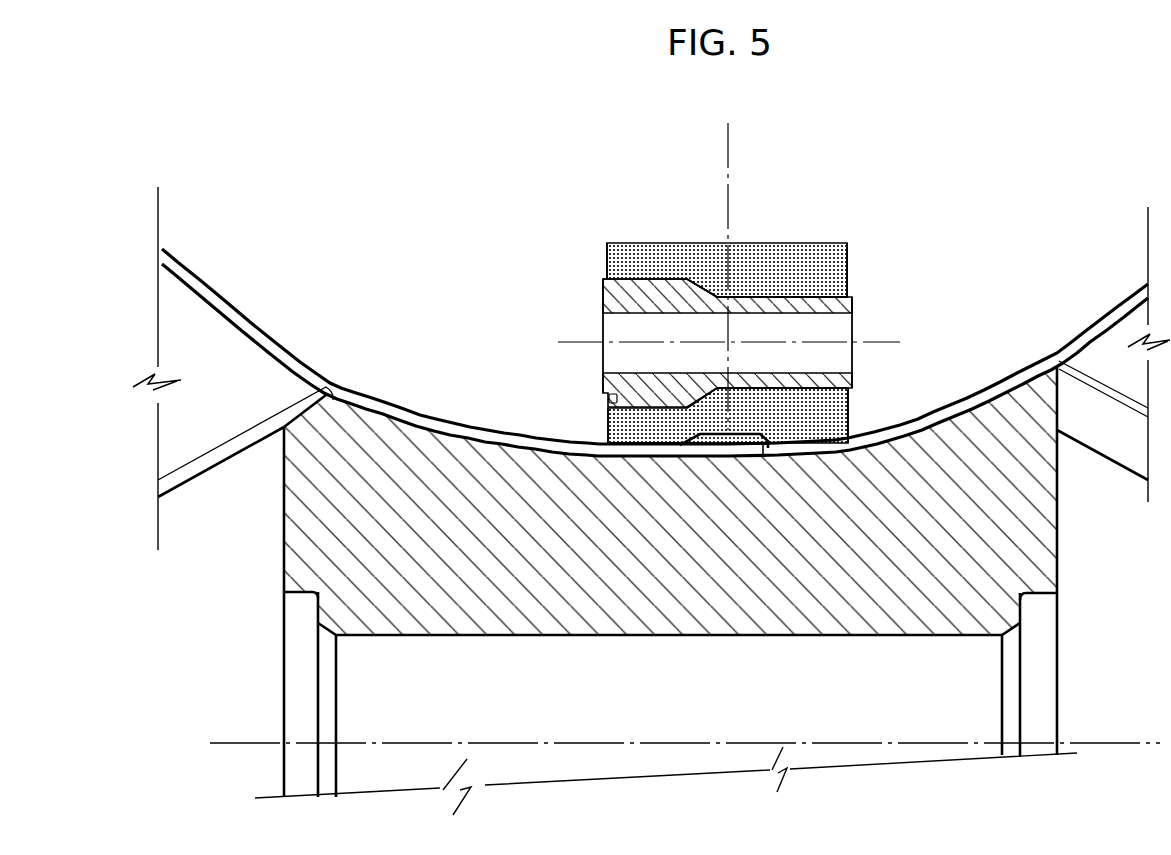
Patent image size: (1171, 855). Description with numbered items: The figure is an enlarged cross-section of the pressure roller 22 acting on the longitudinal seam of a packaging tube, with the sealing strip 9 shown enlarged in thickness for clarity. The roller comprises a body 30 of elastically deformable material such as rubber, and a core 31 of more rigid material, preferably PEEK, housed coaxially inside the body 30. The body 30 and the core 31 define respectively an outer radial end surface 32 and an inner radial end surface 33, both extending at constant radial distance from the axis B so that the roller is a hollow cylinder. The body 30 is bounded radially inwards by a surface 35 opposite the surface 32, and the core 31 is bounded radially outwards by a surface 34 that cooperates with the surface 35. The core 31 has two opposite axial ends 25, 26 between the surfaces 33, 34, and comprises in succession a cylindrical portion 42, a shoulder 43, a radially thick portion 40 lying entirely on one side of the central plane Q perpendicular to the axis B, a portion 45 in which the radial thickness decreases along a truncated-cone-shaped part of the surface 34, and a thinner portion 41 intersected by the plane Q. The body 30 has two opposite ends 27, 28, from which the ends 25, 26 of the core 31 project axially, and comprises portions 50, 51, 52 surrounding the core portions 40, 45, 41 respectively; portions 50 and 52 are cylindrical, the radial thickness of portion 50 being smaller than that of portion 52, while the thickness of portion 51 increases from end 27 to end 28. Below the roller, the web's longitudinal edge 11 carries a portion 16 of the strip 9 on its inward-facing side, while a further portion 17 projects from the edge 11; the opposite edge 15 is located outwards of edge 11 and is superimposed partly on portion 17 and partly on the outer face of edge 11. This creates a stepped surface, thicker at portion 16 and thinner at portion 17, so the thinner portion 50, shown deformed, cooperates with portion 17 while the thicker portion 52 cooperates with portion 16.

The sealing strip 9 is at (738, 421).
The longitudinal edge 11 is at (775, 386).
The longitudinal edge 15 is at (737, 449).
The portion of strip 16 is at (757, 449).
The portion of strip 17 is at (621, 442).
The pressure roller 22 is at (851, 208).
The axial end of core 25 is at (571, 305).
The axial end of core 26 is at (879, 298).
The end of body 27 is at (596, 431).
The end of body 28 is at (856, 414).
The body 30 is at (607, 458).
The core 31 is at (786, 290).
The outer radial end surface 32 is at (764, 451).
The inner radial end surface 33 is at (615, 366).
The surface 34 is at (677, 419).
The surface 35 is at (765, 455).
The portion of core 40 is at (635, 285).
The portion of core 41 is at (752, 290).
The cylindrical portion 42 is at (598, 292).
The shoulder 43 is at (596, 261).
The portion of core 45 is at (695, 290).
The portion of body 50 is at (635, 425).
The portion of body 51 is at (712, 412).
The portion of body 52 is at (819, 415).
The central plane Q is at (733, 170).
The axis B is at (896, 341).